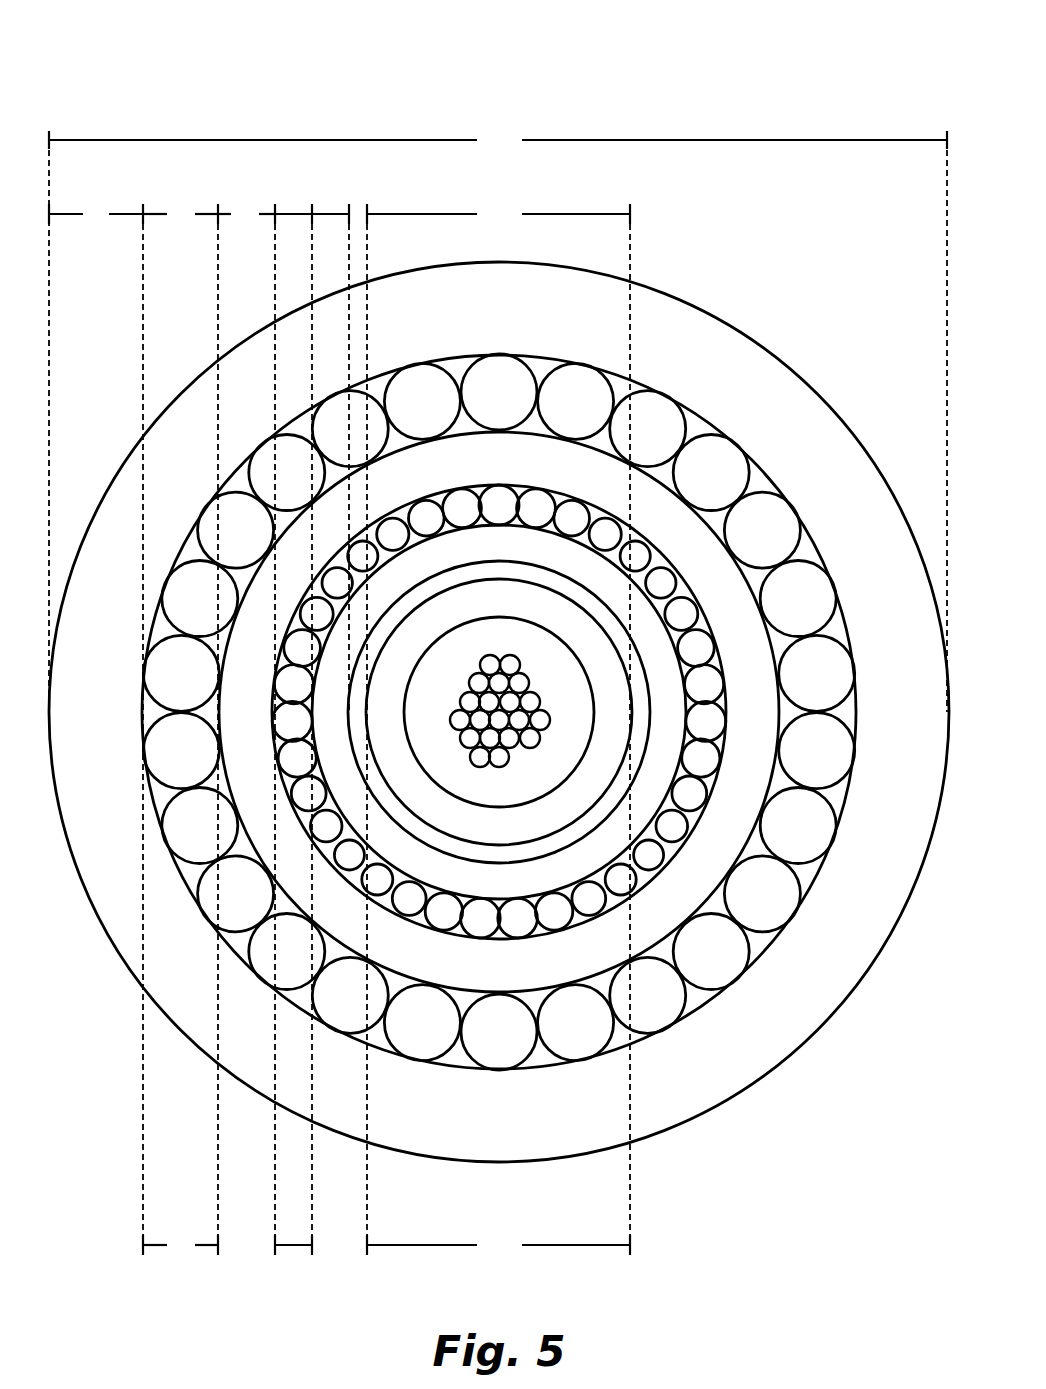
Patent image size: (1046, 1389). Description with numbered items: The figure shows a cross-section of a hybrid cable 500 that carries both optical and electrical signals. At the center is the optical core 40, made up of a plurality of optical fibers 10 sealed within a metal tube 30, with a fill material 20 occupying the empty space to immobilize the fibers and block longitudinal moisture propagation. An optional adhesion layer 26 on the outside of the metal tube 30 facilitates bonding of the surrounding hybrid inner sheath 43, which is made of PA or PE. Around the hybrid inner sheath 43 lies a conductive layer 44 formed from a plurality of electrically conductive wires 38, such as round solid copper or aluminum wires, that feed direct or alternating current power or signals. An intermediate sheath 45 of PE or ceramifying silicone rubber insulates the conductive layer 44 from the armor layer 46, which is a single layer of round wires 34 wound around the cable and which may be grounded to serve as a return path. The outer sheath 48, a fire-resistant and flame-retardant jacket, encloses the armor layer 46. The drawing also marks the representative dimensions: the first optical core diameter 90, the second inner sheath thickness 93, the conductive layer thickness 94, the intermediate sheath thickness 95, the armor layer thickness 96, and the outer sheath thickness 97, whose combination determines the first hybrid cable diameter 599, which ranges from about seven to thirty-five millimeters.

The hybrid cable 500 is at (154, 67).
The optical fibers 10 is at (528, 666).
The fill material 20 is at (486, 796).
The metal tube 30 is at (486, 836).
The adhesion layer 26 is at (557, 588).
The hybrid inner sheath 43 is at (486, 891).
The electrically conductive wires 38 is at (292, 648).
The intermediate sheath 45 is at (486, 978).
The round wires 34 is at (486, 405).
The outer sheath 48 is at (486, 1118).
The first hybrid cable diameter 599 is at (498, 419).
The outer sheath thickness 97 is at (96, 723).
The armor layer thickness 96 is at (180, 723).
The intermediate sheath thickness 95 is at (246, 723).
The conductive layer thickness 94 is at (294, 215).
The second inner sheath thickness 93 is at (328, 215).
The first optical core diameter 90 is at (498, 723).
The armor layer 46 is at (180, 1245).
The conductive layer 44 is at (295, 1248).
The optical core 40 is at (498, 1245).